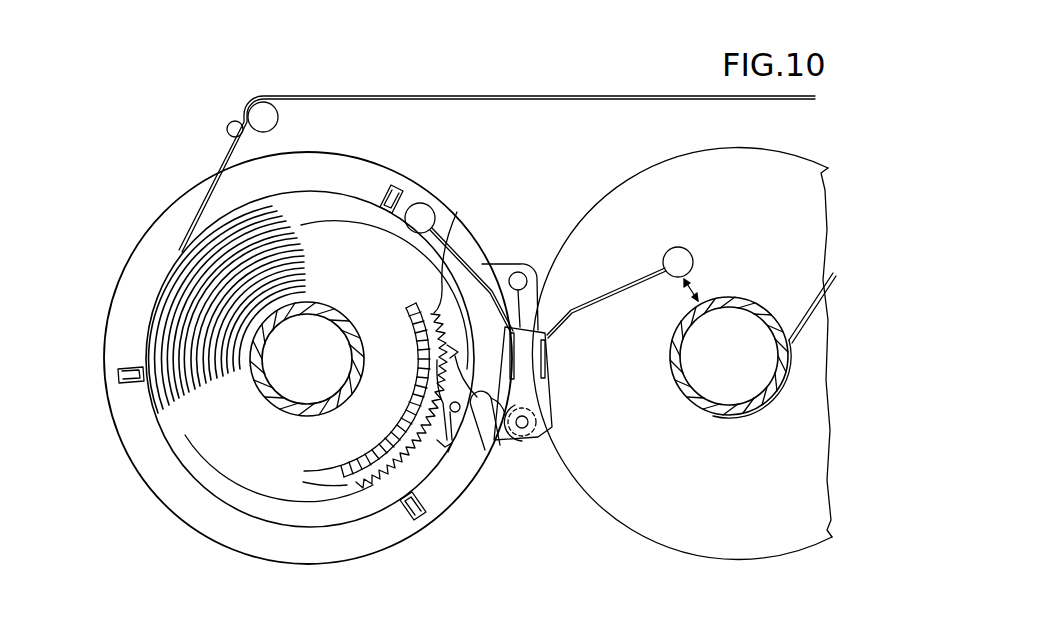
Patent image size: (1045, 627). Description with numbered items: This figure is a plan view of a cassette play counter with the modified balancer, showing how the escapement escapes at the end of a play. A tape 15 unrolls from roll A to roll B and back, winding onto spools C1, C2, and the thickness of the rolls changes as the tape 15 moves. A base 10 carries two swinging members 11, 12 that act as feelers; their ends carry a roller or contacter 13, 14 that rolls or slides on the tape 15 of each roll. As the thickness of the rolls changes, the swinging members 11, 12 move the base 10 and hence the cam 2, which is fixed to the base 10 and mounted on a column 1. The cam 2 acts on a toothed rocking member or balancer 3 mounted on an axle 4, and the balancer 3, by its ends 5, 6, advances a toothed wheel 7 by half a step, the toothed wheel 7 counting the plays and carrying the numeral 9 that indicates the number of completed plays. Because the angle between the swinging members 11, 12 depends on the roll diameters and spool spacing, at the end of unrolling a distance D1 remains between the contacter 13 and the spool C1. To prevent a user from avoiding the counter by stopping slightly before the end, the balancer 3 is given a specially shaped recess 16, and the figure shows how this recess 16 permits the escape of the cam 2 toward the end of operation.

The column 1 is at (527, 431).
The cam 2 is at (478, 420).
The balancer 3 is at (446, 448).
The axle 4 is at (460, 410).
The end of balancer 5 is at (455, 348).
The end of balancer 6 is at (441, 462).
The toothed wheel 7 is at (457, 205).
The numeral 9 is at (352, 478).
The base 10 is at (530, 370).
The swinging member 11 is at (598, 297).
The swinging member 12 is at (458, 242).
The roller or contacter 13 is at (676, 258).
The roller or contacter 14 is at (424, 214).
The tape 15 is at (476, 96).
The recess 16 is at (483, 432).
The roll A is at (745, 300).
The roll B is at (202, 287).
The spool C1 is at (722, 414).
The spool C2 is at (300, 416).
The distance D1 is at (690, 290).